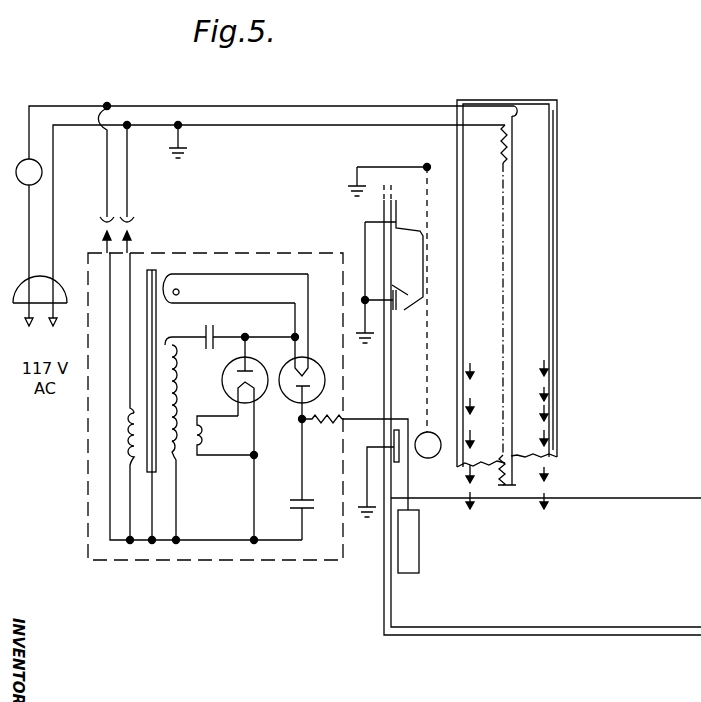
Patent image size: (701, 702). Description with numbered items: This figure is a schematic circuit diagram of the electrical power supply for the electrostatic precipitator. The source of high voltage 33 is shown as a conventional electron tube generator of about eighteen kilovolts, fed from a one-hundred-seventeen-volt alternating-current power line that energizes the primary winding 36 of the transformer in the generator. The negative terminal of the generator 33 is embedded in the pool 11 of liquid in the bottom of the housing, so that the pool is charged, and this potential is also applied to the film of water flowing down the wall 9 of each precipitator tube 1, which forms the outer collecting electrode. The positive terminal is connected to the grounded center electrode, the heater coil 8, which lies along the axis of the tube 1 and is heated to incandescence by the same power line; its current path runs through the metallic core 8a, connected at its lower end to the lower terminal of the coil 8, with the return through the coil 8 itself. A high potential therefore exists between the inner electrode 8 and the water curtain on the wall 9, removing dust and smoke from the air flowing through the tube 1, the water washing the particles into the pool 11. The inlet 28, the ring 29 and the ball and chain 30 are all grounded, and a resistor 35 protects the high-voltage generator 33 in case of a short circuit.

The precipitator tube 1 is at (555, 292).
The heater coil 8 is at (504, 472).
The metallic core 8a is at (513, 352).
The wall 9 is at (549, 210).
The pool 11 is at (651, 505).
The inlet 28 is at (405, 228).
The ring 29 is at (394, 450).
The ball and chain 30 is at (425, 432).
The source of high voltage 33 is at (243, 180).
The resistor 35 is at (322, 426).
The primary winding 36 is at (125, 433).